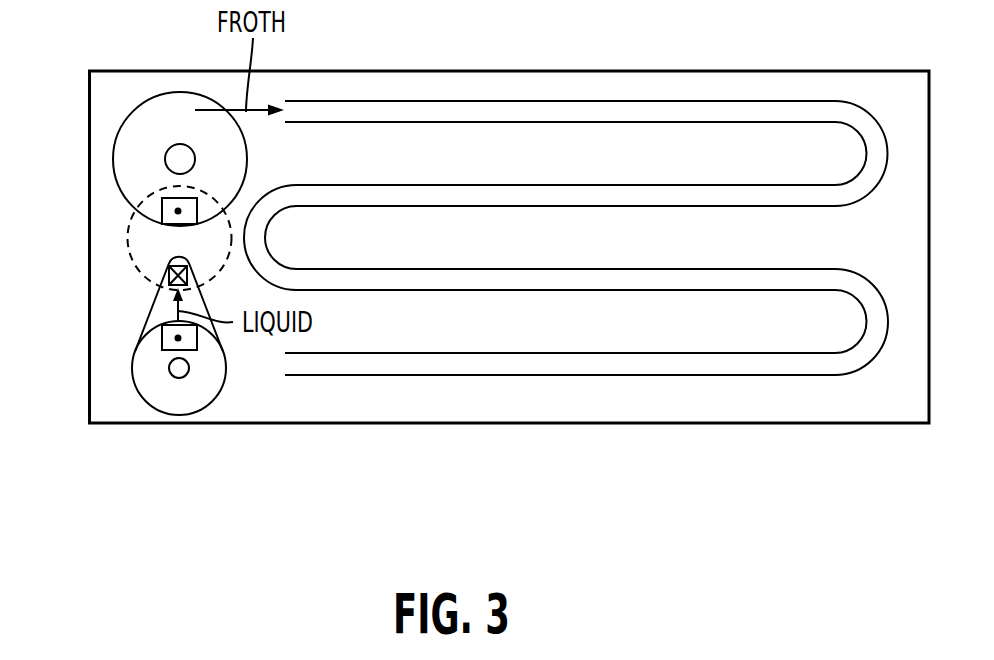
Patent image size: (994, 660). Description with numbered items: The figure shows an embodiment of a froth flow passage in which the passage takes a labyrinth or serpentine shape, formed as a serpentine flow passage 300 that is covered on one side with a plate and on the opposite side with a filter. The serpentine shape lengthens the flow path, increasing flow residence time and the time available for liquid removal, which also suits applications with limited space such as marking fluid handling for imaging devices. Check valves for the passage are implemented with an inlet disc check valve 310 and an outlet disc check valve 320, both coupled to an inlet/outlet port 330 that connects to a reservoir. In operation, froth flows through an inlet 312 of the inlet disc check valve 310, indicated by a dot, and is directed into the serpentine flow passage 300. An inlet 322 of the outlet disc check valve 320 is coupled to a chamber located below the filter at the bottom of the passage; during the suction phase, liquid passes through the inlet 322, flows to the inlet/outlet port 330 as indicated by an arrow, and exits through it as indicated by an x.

The serpentine flow passage 300 is at (512, 115).
The inlet disc check valve 310 is at (165, 113).
The inlet of inlet disc check valve 312 is at (162, 206).
The outlet disc check valve 320 is at (184, 393).
The inlet of outlet disc check valve 322 is at (162, 348).
The inlet/outlet port 330 is at (130, 260).